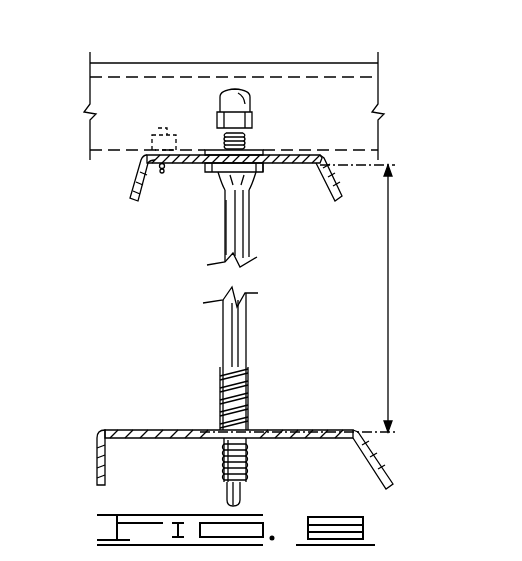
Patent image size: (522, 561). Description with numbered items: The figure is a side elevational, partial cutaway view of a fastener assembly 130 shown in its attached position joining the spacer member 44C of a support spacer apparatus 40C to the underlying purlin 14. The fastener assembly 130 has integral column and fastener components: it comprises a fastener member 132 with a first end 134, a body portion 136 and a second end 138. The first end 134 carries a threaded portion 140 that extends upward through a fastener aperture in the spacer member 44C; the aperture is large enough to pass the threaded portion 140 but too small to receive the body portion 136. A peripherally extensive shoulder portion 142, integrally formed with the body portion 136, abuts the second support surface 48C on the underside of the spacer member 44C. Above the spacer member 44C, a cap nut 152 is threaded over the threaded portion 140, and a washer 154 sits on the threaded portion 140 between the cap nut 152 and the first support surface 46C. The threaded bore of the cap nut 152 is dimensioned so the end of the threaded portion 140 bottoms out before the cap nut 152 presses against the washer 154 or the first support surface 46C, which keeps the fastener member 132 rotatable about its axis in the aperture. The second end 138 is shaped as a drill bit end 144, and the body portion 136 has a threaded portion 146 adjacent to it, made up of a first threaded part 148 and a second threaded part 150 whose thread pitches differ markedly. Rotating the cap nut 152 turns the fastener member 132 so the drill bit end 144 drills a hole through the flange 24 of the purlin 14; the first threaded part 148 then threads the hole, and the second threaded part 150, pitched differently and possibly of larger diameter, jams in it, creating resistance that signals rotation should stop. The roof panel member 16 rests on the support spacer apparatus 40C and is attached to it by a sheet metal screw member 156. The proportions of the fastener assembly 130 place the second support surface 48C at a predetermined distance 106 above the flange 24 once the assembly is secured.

The roof panel member 16 is at (317, 63).
The predetermined distance 106 is at (385, 286).
The sheet metal screw member 156 is at (163, 128).
The washer 154 is at (212, 137).
The cap nut 152 is at (250, 117).
The threaded portion 140 is at (250, 137).
The spacer member 44C is at (284, 152).
The first support surface 46C is at (303, 154).
The support spacer apparatus 40C is at (122, 182).
The second support surface 48C is at (270, 178).
The first end 134 is at (224, 192).
The fastener assembly 130 is at (225, 228).
The fastener member 132 is at (222, 250).
The shoulder portion 142 is at (270, 200).
The body portion 136 is at (232, 330).
The second threaded part 150 is at (247, 395).
The threaded portion 146 is at (218, 403).
The flange 24 is at (136, 430).
The purlin 14 is at (97, 455).
The first threaded part 148 is at (250, 468).
The second end 138 is at (225, 476).
The drill bit end 144 is at (228, 503).